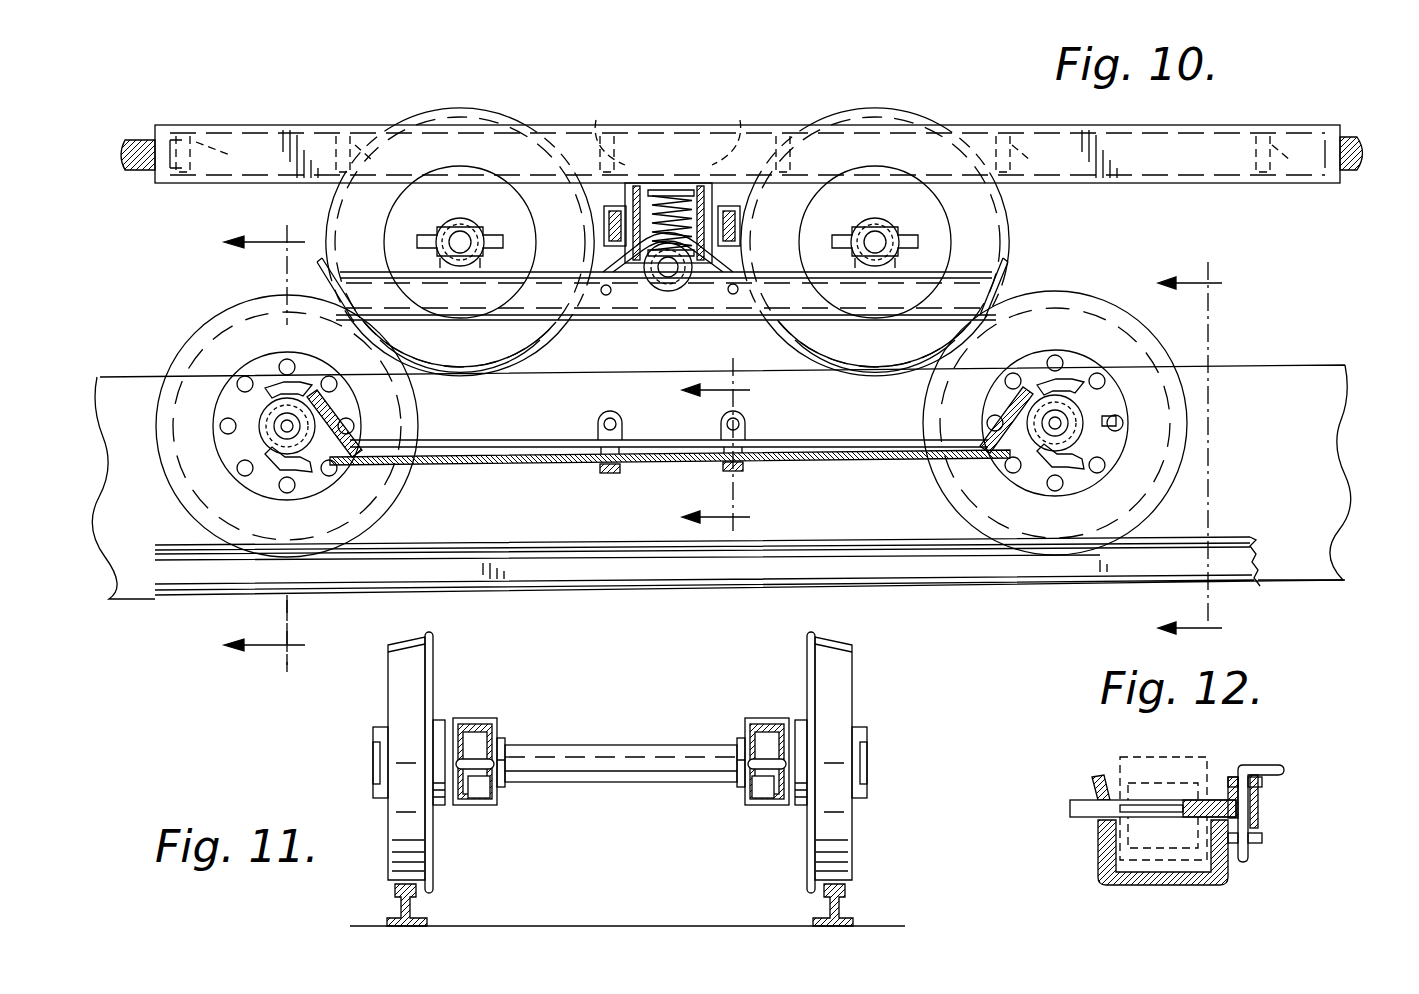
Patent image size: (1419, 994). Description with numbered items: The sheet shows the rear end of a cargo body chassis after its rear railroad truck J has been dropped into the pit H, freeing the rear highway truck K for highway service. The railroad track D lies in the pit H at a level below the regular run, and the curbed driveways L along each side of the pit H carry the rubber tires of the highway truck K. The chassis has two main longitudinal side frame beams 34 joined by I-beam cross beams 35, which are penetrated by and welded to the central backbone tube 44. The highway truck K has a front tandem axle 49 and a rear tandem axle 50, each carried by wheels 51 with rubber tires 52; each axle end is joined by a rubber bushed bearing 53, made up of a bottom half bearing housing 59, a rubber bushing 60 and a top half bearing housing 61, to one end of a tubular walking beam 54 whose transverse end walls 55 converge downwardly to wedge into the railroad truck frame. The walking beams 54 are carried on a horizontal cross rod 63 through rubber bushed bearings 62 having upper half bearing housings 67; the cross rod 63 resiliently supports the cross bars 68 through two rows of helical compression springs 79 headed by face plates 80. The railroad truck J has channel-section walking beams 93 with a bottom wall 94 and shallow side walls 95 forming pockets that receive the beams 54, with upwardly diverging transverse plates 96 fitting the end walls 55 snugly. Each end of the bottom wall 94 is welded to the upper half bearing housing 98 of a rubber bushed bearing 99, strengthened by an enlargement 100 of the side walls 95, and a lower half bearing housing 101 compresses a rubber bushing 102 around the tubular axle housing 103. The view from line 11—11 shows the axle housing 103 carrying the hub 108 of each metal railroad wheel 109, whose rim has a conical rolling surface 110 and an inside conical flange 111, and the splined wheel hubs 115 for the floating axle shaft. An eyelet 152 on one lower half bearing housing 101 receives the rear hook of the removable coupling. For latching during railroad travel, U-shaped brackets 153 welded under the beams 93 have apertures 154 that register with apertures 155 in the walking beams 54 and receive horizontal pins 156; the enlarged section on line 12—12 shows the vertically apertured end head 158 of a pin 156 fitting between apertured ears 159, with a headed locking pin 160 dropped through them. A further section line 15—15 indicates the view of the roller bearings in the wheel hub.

In FIG. 10, the main longitudinal side frame beams 34 is at (1322, 125).
In FIG. 10, the cross beams 35 is at (186, 136).
In FIG. 10, the central longitudinal horizontal backbone tube 44 is at (1368, 145).
In FIG. 10, the front tandem axle 49 is at (892, 222).
In FIG. 10, the rear tandem axle 50 is at (410, 228).
In FIG. 10, the wheels 51 is at (450, 108).
In FIG. 10, the rubber tire 52 is at (488, 110).
In FIG. 10, the rubber bushed bearing 53 is at (478, 216).
In FIG. 10, the horizontal walking beam 54 is at (585, 330).
In FIG. 12, the horizontal walking beam 54 is at (1196, 745).
In FIG. 10, the transverse end walls 55 is at (326, 272).
In FIG. 10, the bottom half bearing housing 59 is at (425, 266).
In FIG. 10, the rubber bushing 60 is at (483, 232).
In FIG. 10, the top half bearing housing 61 is at (442, 230).
In FIG. 10, the rubber bushed bearing 62 is at (670, 295).
In FIG. 10, the horizontal cross rod 63 is at (583, 322).
In FIG. 10, the upper semicylindrical half bearing housing 67 is at (733, 258).
In FIG. 10, the cross bars 68 is at (604, 215).
In FIG. 10, the helical compression springs 79 is at (668, 183).
In FIG. 10, the upright rectangular face plates 80 is at (598, 120).
In FIG. 10, the longitudinal side frame members 93 is at (866, 460).
In FIG. 10, the bottom wall 94 is at (498, 465).
In FIG. 10, the side walls 95 is at (522, 430).
In FIG. 10, the transverse plates 96 is at (330, 412).
In FIG. 10, the upper half bearing housing 98 is at (305, 384).
In FIG. 11, the upper half bearing housing 98 is at (478, 718).
In FIG. 10, the rubber bushed bearing 99 is at (260, 426).
In FIG. 11, the rubber bushed bearing 99 is at (508, 730).
In FIG. 10, the enlargement 100 is at (322, 390).
In FIG. 10, the lower half bearing housing 101 is at (270, 482).
In FIG. 11, the lower half bearing housing 101 is at (480, 790).
In FIG. 10, the rubber bushing 102 is at (266, 432).
In FIG. 11, the rubber bushing 102 is at (505, 760).
In FIG. 10, the tubular axle housing 103 is at (260, 410).
In FIG. 11, the tubular axle housing 103 is at (675, 745).
In FIG. 11, the hub 108 is at (442, 806).
In FIG. 11, the metal railroad wheel 109 is at (388, 822).
In FIG. 11, the conical rolling surface 110 is at (406, 644).
In FIG. 11, the inside conical flange 111 is at (425, 682).
In FIG. 11, the wheel hubs 115 is at (372, 748).
In FIG. 10, the eyelet 152 is at (1120, 421).
In FIG. 11, the eyelet 152 is at (478, 766).
In FIG. 10, the U-shaped brackets 153 is at (612, 473).
In FIG. 10, the apertures 154 is at (620, 426).
In FIG. 10, the apertures 155 is at (602, 292).
In FIG. 12, the horizontal pins 156 is at (1072, 806).
In FIG. 12, the vertically apertured end head 158 is at (1258, 810).
In FIG. 12, the apertured ears 159 is at (1262, 782).
In FIG. 12, the headed locking pins 160 is at (1286, 768).
In FIG. 10, the view line 11— 11 is at (1205, 448).
In FIG. 10, the section line 12— 12 is at (733, 446).
In FIG. 10, the section line 15— 15 is at (264, 446).
In FIG. 11, the section line 15— 15 is at (261, 643).
In FIG. 10, the rear highway truck K is at (1000, 250).
In FIG. 12, the rear highway truck K is at (1168, 755).
In FIG. 10, the rear railroad truck J is at (540, 480).
In FIG. 11, the rear railroad truck J is at (498, 715).
In FIG. 10, the curbed driveway L is at (1275, 358).
In FIG. 10, the pit H is at (1300, 366).
In FIG. 10, the track D is at (1242, 523).
In FIG. 11, the track D is at (385, 908).